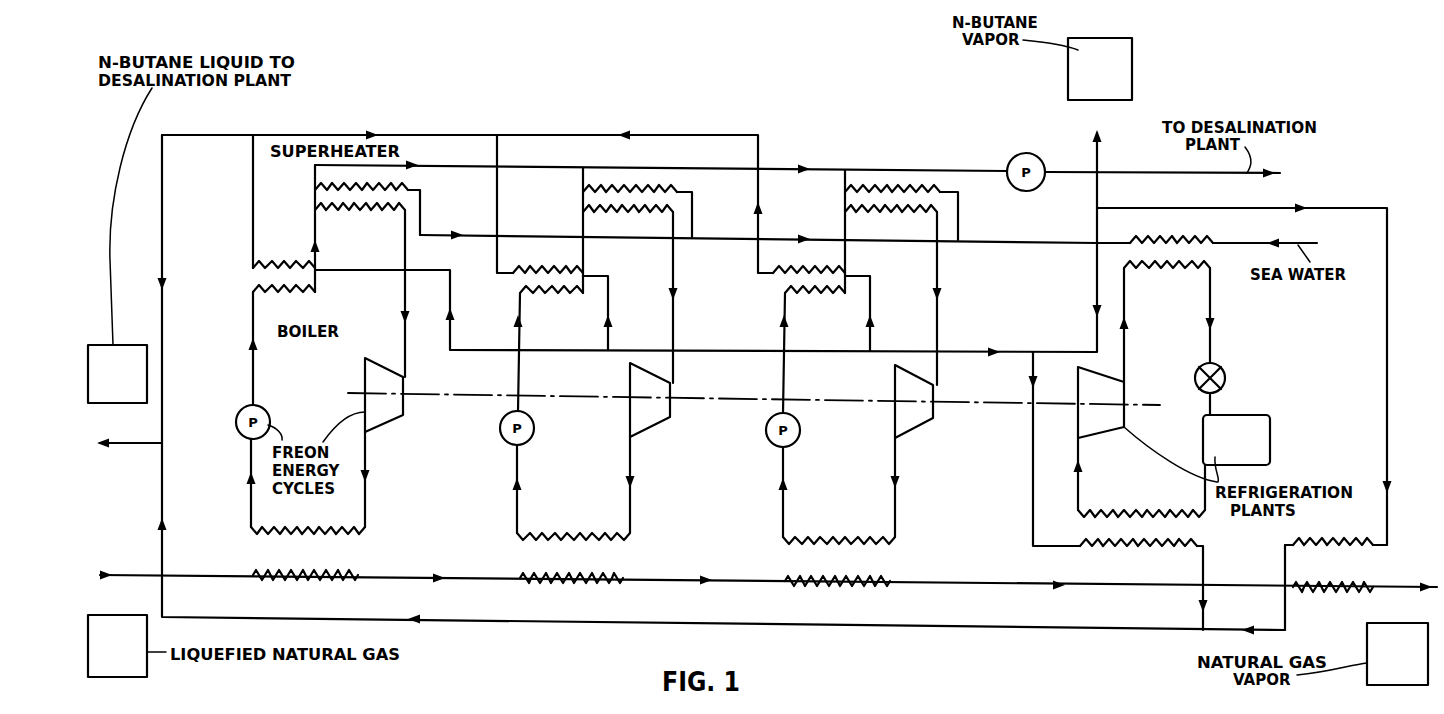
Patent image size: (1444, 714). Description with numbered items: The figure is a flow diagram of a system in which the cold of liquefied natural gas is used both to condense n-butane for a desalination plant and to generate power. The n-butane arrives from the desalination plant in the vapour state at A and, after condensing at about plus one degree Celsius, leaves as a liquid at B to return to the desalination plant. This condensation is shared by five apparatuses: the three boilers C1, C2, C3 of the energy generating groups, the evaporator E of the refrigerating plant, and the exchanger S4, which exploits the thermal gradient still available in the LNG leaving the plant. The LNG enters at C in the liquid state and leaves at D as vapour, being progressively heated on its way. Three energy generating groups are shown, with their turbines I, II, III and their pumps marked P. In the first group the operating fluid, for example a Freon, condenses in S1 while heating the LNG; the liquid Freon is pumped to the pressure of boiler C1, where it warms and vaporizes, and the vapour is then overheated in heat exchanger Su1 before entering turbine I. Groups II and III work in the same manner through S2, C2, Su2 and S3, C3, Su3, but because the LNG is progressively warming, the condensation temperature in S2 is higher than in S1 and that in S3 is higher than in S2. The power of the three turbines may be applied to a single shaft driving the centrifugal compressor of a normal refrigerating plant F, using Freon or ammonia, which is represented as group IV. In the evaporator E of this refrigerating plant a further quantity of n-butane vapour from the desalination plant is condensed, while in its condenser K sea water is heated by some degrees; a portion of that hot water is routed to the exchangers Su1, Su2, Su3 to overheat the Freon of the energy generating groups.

The n-butane vapour inlet A is at (1100, 69).
The n-butane liquid outlet B is at (117, 374).
The LNG liquid inlet C is at (117, 646).
The natural gas vapour outlet D is at (1397, 654).
The evaporator of the refrigerating plant E is at (1141, 528).
The refrigerating plant F is at (1236, 451).
The condenser of the refrigerating plant K is at (1168, 309).
The heat exchanger (superheater) of group I Su1 is at (292, 160).
The heat exchanger (superheater) of group II Su2 is at (637, 275).
The heat exchanger (superheater) of group III Su3 is at (901, 277).
The boiler of group I C1 is at (275, 336).
The boiler of group II C2 is at (560, 338).
The boiler of group III C3 is at (821, 339).
The turbine of first energy generating group I is at (384, 442).
The turbine of second energy generating group II is at (650, 448).
The turbine of third energy generating group III is at (914, 451).
The refrigerating system group IV is at (1101, 438).
The condenser exchanger of group I S1 is at (308, 509).
The condenser exchanger of group II S2 is at (573, 514).
The condenser exchanger of group III S3 is at (839, 516).
The LNG outlet exchanger S4 is at (1336, 565).